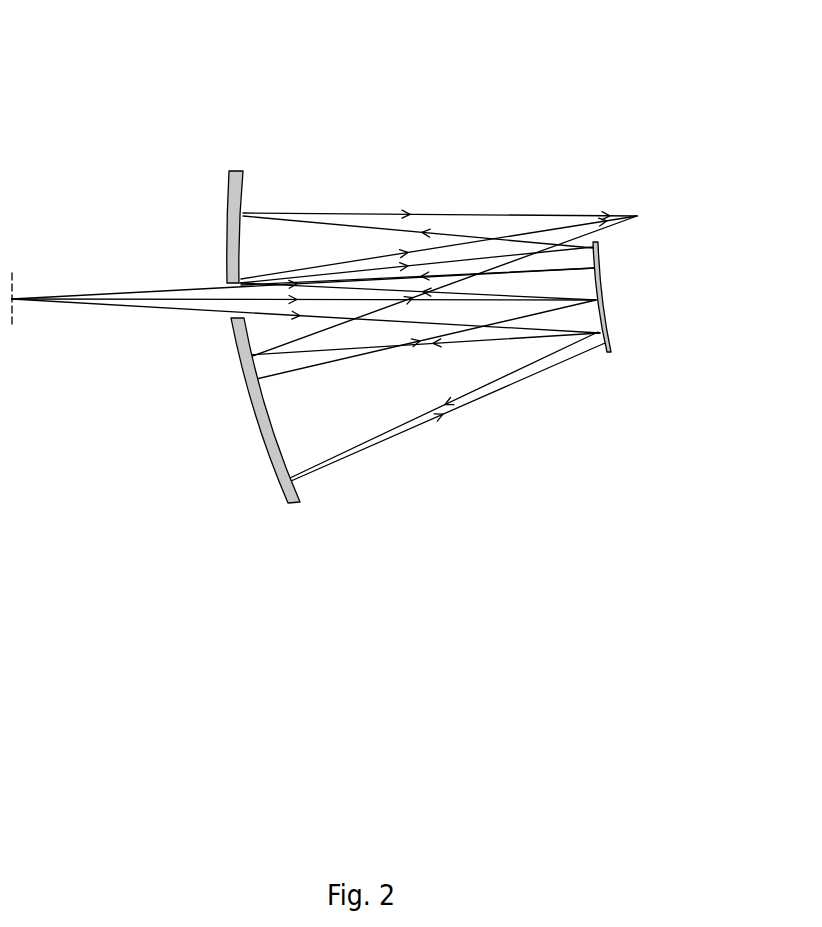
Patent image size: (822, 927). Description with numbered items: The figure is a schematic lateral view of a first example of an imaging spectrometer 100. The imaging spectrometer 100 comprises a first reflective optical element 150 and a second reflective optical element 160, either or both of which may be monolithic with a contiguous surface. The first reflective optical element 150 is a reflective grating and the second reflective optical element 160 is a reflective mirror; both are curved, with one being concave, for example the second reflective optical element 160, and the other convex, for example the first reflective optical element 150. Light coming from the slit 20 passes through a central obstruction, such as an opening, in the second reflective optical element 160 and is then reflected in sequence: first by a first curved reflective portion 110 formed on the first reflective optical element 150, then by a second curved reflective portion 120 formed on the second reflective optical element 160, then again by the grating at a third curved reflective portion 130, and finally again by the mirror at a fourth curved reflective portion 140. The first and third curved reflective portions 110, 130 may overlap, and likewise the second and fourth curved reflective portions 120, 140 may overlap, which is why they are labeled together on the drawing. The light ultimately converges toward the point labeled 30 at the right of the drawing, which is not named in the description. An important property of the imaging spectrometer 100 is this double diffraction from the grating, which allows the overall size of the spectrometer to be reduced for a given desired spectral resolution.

The imaging spectrometer 100 is at (508, 173).
The slit 20 is at (12, 330).
The focal point / image plane 30 is at (637, 205).
The first curved reflective portion 110 is at (598, 298).
The second curved reflective portion 120 is at (229, 205).
The third curved reflective portion 130 is at (636, 354).
The fourth curved reflective portion 140 is at (268, 470).
The first reflective optical element 150 is at (608, 352).
The second reflective optical element 160 is at (293, 505).